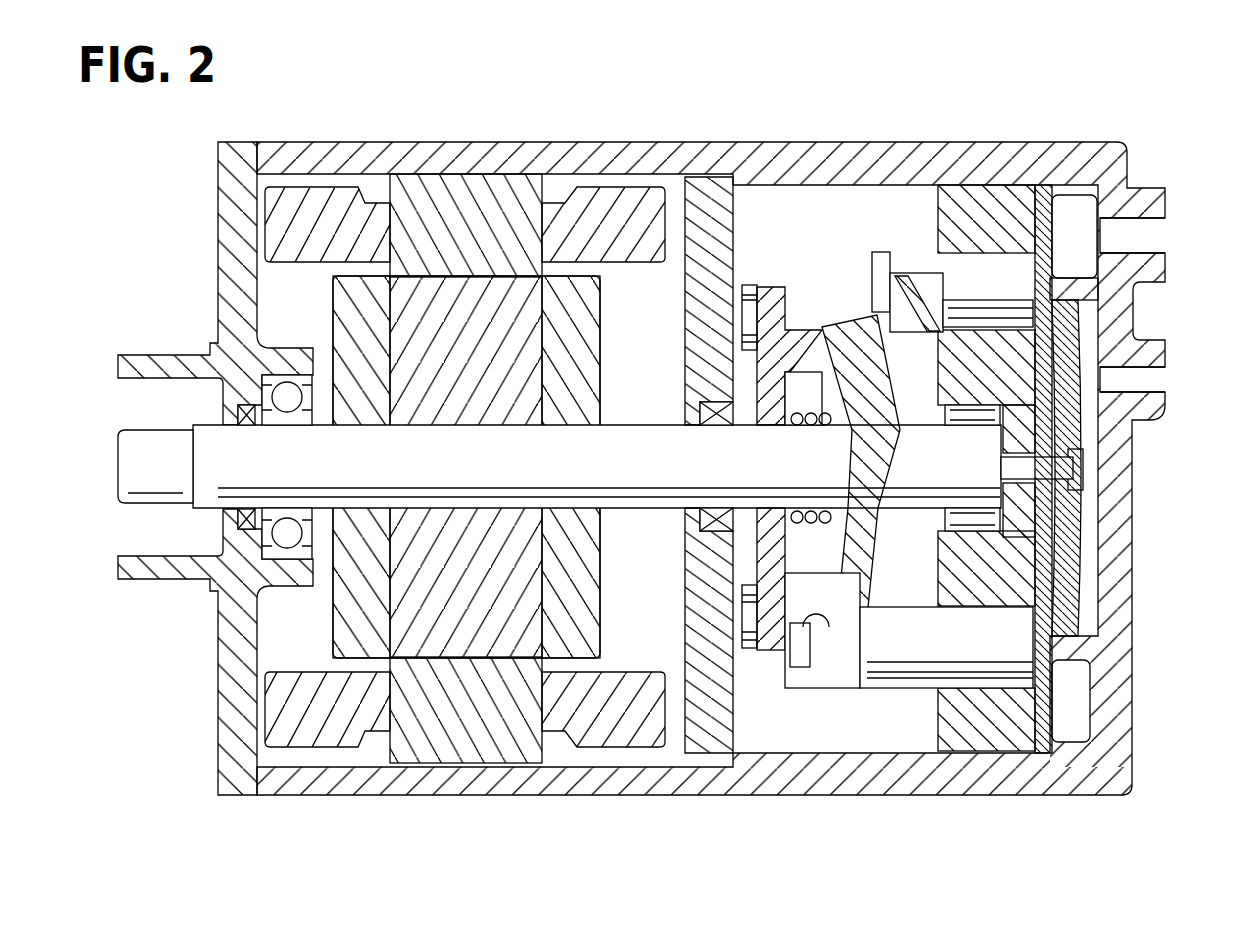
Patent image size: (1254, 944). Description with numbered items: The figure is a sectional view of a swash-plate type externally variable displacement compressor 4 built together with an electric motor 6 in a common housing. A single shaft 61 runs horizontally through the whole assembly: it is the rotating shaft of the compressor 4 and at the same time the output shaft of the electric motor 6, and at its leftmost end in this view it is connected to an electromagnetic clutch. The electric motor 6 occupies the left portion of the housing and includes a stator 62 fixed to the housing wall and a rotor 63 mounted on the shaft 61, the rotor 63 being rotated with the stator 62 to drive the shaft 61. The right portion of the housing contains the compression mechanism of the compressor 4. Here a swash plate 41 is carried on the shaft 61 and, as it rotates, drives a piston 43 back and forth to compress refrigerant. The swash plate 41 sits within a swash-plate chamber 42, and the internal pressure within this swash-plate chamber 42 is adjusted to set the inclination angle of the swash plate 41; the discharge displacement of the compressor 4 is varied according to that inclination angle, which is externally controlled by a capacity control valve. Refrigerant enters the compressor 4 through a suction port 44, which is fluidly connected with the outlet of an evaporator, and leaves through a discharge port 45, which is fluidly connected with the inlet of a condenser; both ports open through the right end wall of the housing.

The compressor 4 is at (982, 466).
The electric motor 6 is at (600, 466).
The swash plate 41 is at (868, 350).
The swash-plate chamber 42 is at (772, 208).
The piston 43 is at (893, 263).
The suction port 44 is at (1143, 240).
The discharge port 45 is at (1143, 380).
The shaft 61 is at (658, 455).
The stator 62 is at (495, 250).
The rotor 63 is at (443, 300).